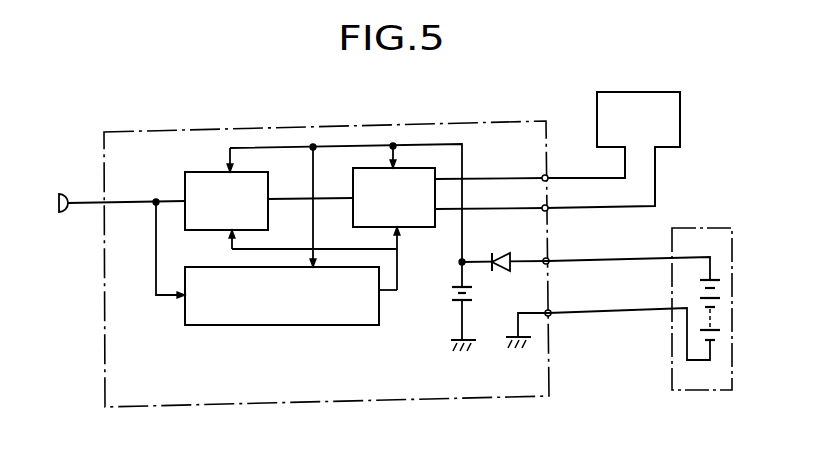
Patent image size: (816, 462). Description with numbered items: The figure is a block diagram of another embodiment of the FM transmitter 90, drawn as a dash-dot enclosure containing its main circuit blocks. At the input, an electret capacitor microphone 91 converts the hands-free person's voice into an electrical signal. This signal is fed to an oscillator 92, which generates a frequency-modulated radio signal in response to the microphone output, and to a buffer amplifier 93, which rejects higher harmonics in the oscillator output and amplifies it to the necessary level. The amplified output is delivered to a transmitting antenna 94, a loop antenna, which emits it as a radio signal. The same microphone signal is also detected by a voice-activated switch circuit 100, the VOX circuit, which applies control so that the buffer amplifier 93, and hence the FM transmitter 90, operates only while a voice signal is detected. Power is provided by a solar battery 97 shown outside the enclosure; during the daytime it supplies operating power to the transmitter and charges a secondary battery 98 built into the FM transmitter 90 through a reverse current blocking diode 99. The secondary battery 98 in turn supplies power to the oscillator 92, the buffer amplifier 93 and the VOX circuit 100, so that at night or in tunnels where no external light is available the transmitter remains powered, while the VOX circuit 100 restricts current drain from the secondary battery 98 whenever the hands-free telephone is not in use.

The FM transmitter 90 is at (520, 118).
The EC microphone 91 is at (66, 193).
The oscillator 92 is at (189, 176).
The buffer amplifier 93 is at (436, 172).
The transmitting antenna 94 is at (665, 98).
The solar battery 97 is at (688, 392).
The secondary battery 98 is at (451, 299).
The reverse current blocking diode 99 is at (505, 253).
The voice-activated switch circuit 100 is at (312, 325).